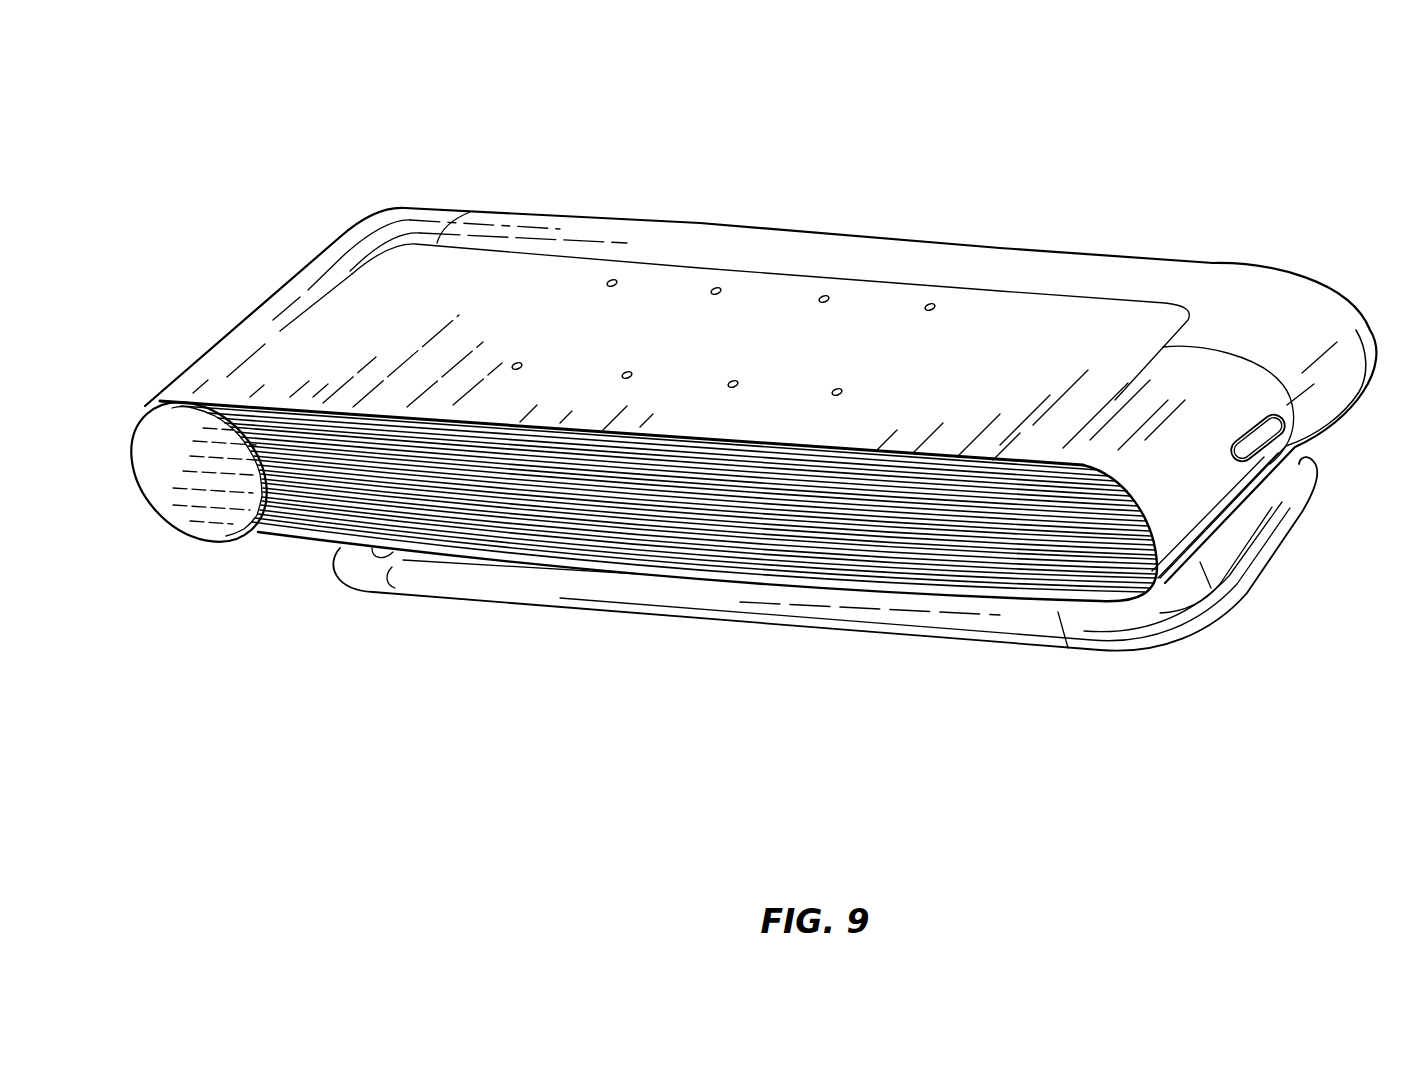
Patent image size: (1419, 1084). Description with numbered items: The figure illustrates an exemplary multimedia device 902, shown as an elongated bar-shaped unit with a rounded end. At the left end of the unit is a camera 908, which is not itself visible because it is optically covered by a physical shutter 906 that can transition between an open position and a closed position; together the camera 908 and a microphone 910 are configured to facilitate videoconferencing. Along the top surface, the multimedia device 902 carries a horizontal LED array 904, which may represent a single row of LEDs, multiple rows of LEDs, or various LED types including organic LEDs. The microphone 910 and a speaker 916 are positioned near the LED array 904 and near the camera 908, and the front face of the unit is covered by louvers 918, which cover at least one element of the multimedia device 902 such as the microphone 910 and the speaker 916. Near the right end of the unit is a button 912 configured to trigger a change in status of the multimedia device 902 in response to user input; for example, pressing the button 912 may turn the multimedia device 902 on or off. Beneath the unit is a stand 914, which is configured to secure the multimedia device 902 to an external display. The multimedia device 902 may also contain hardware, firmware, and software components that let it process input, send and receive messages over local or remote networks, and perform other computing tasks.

The multimedia device 902 is at (246, 196).
The LED array 904 is at (537, 519).
The shutter 906 is at (170, 513).
The camera 908 is at (211, 500).
The microphone 910 is at (358, 489).
The button 912 is at (1271, 459).
The stand 914 is at (1010, 651).
The speaker 916 is at (468, 546).
The louvers 918 is at (421, 508).